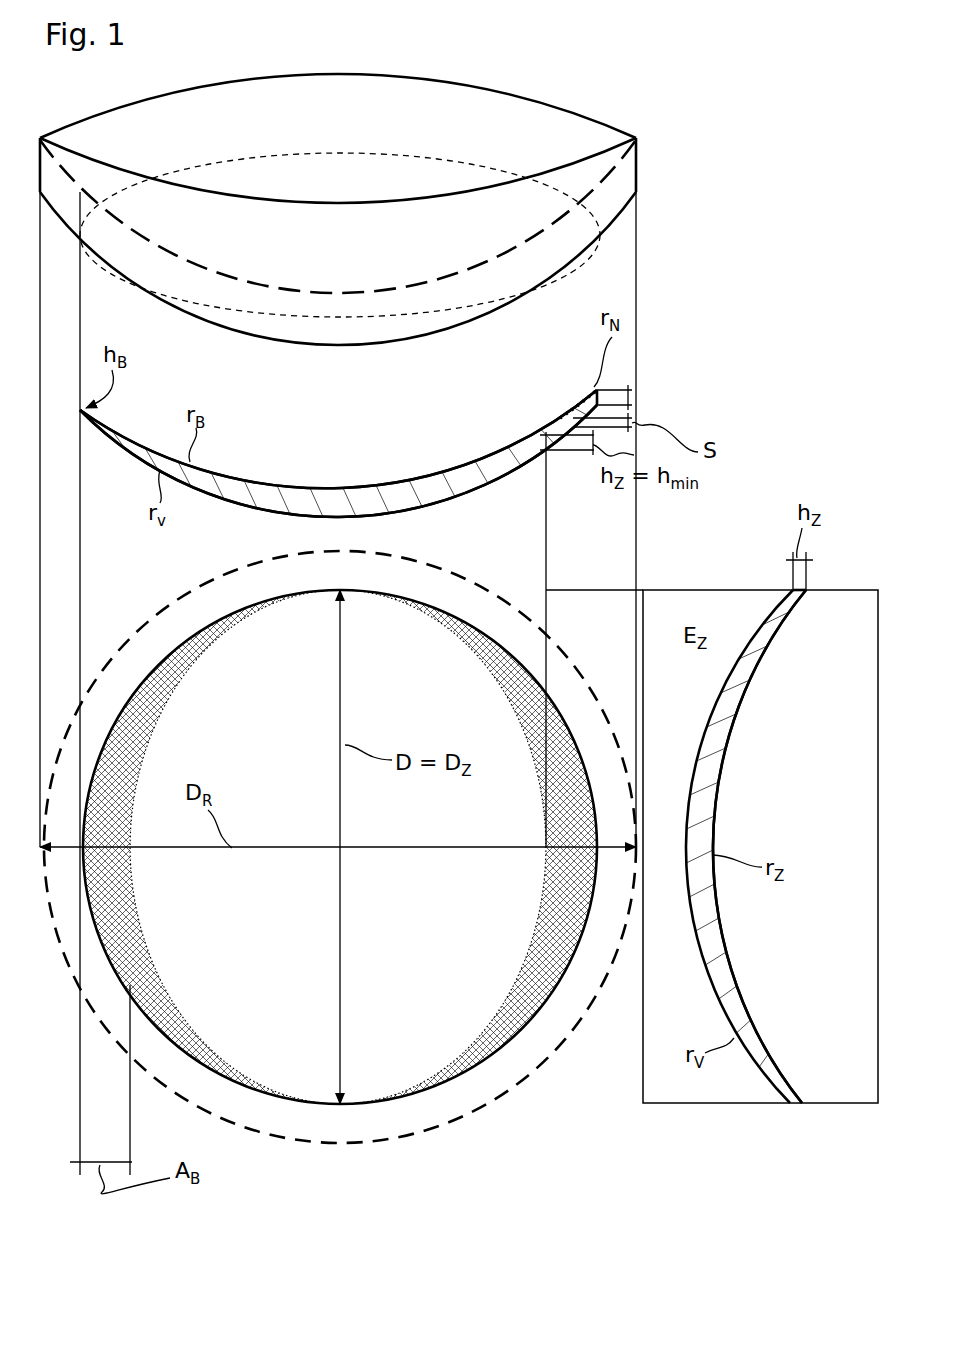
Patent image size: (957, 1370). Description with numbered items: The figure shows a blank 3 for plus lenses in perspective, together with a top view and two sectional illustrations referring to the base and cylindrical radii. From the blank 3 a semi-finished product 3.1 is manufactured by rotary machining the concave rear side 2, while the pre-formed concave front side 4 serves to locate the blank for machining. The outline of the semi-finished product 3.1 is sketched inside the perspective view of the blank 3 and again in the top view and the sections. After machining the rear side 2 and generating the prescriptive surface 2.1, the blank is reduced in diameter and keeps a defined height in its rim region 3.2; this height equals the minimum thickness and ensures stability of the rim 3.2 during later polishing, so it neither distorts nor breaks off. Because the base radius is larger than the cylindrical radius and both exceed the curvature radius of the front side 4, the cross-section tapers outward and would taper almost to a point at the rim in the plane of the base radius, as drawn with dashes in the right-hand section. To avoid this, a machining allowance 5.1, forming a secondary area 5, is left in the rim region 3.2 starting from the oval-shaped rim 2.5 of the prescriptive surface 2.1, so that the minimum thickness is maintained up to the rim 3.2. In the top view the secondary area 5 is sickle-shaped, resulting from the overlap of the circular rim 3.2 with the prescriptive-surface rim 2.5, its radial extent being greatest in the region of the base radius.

The rear side 2 is at (366, 437).
The prescriptive surface 2.1 is at (302, 485).
The rim of the prescriptive surface 2.5 is at (538, 427).
The blank 3 is at (158, 144).
The semi-finished product 3.1 is at (430, 157).
The rim region 3.2 is at (604, 386).
The front side 4 is at (469, 499).
The secondary area 5 is at (590, 400).
The machining allowance 5.1 is at (631, 398).